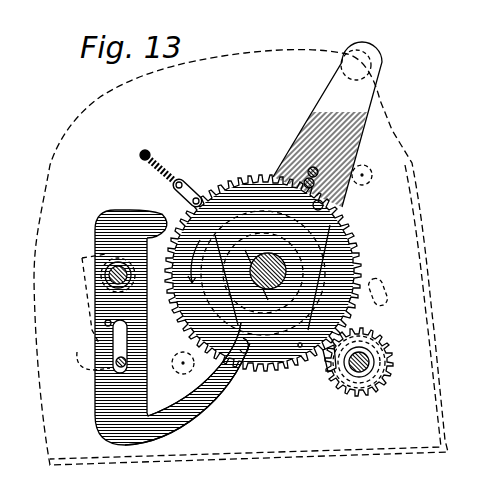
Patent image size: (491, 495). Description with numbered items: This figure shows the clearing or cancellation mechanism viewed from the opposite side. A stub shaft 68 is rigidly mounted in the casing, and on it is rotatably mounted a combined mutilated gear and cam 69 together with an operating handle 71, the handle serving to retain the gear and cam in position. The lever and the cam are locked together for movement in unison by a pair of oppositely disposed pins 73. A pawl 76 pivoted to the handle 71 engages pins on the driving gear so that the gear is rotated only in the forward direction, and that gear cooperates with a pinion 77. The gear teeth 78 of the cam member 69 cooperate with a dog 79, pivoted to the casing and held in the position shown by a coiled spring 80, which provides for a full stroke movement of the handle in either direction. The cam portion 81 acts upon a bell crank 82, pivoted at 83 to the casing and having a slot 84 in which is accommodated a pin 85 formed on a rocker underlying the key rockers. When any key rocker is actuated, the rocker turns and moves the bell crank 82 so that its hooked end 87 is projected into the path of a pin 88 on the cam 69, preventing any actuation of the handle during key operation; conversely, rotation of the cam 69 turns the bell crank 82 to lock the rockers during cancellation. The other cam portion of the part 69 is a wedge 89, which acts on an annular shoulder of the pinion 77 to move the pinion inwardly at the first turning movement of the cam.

The operating handle 71 is at (312, 110).
The pawl 76 is at (308, 170).
The stub shaft 68 is at (303, 207).
The gear teeth 78 is at (348, 218).
The pins 73 is at (230, 250).
The pinion 77 is at (388, 383).
The dog 79 is at (185, 188).
The coiled spring 80 is at (161, 162).
The cam portion 81 is at (172, 327).
The bell crank 82 is at (97, 235).
The pivot 83 is at (109, 276).
The slot 84 is at (112, 337).
The pin 85 is at (116, 367).
The hooked end 87 is at (205, 410).
The pin 88 is at (232, 334).
The combined mutilated gear and cam 69 is at (298, 333).
The wedge 89 is at (323, 367).